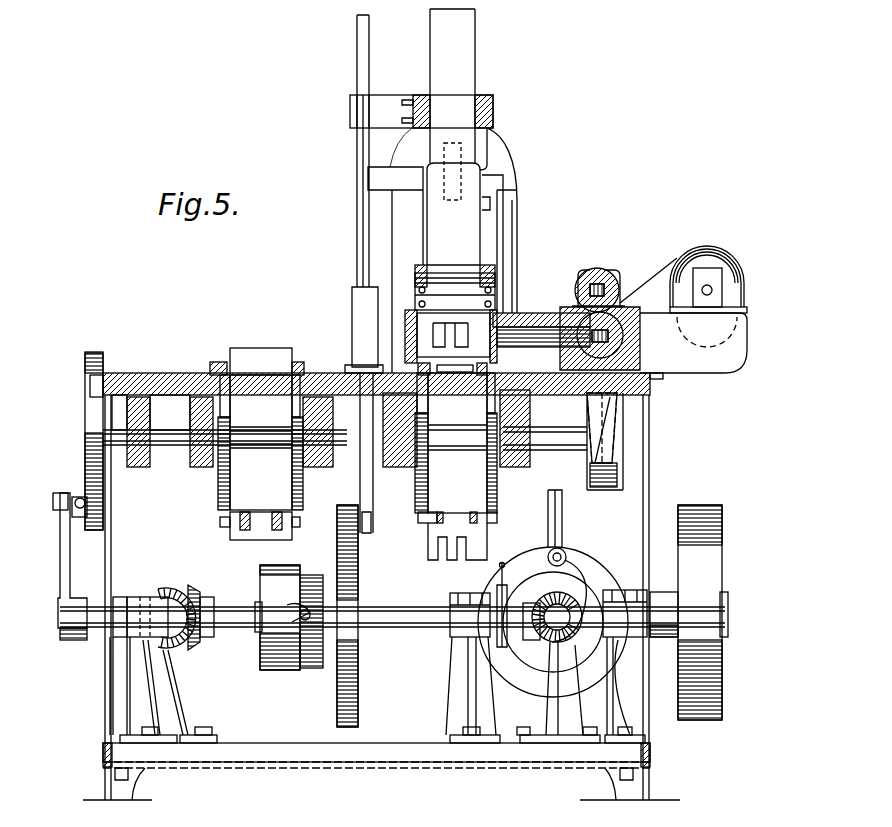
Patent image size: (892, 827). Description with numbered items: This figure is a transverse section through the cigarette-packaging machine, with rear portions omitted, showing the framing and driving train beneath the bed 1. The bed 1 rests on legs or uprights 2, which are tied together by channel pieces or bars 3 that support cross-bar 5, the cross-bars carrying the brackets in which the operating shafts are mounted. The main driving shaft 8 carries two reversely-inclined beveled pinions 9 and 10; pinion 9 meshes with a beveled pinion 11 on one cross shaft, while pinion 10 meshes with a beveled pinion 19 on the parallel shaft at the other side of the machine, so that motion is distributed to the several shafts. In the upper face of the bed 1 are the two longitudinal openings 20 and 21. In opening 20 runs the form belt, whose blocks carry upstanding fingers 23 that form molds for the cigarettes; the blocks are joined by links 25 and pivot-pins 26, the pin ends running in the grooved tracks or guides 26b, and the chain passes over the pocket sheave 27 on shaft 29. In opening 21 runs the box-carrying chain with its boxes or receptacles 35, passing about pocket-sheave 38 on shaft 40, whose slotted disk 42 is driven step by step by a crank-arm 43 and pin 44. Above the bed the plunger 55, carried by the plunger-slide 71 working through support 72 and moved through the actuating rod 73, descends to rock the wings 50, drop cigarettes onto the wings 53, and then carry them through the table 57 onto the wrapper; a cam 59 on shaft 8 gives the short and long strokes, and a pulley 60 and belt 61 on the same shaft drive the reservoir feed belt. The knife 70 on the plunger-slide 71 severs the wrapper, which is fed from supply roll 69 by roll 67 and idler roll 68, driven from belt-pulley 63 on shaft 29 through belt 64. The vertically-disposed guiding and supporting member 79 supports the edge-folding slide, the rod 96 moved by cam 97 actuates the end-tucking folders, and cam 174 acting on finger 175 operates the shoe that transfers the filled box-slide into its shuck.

The bed 1 is at (176, 376).
The legs or uprights 2 is at (108, 700).
The channel pieces or bars 3 is at (103, 760).
The cross-bar 5 is at (376, 748).
The main driving shaft 8 is at (102, 622).
The beveled pinion 9 is at (535, 630).
The beveled pinion 10 is at (196, 596).
The beveled pinion 11 is at (550, 640).
The beveled pinion 19 is at (178, 592).
The opening 20 is at (456, 443).
The opening 21 is at (261, 442).
The upstanding fingers 23 is at (486, 548).
The links 25 is at (430, 527).
The pivot-pins 26 is at (418, 518).
The tracks or guides 26b is at (314, 365).
The pocket sheave 27 is at (428, 488).
The shaft 29 is at (554, 436).
The boxes or receptacles 35 is at (273, 362).
The pocket-sheave 38 is at (236, 490).
The shaft 40 is at (178, 442).
The slotted disk 42 is at (88, 408).
The crank-arm 43 is at (62, 576).
The pin 44 is at (78, 510).
The wings or pivoted plates 50 is at (432, 288).
The plates or wings 53 is at (455, 291).
The plunger 55 is at (470, 234).
The table 57 is at (497, 312).
The cam 59 is at (358, 696).
The pulley 60 is at (547, 563).
The belt 61 is at (498, 569).
The belt-pulley 63 is at (593, 420).
The belt 64 is at (612, 438).
The roll 67 is at (633, 338).
The idler roll 68 is at (597, 272).
The supply roll 69 is at (745, 285).
The knife 70 is at (500, 262).
The plunger-slide 71 is at (455, 92).
The support 72 is at (493, 118).
The actuating rod 73 is at (363, 236).
The guiding and supporting member 79 is at (515, 162).
The rod 96 is at (562, 515).
The cam 97 is at (595, 555).
The cam 174 is at (272, 620).
The finger 175 is at (302, 622).